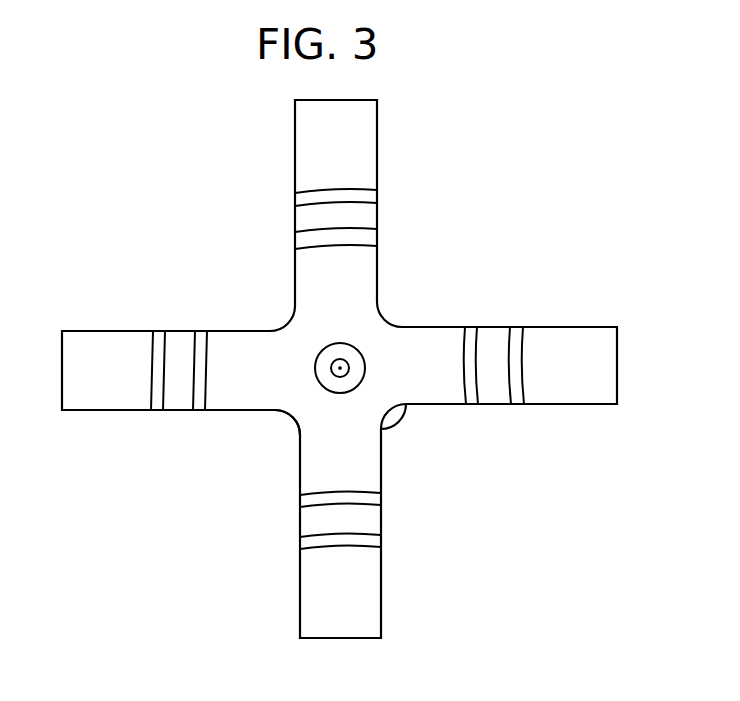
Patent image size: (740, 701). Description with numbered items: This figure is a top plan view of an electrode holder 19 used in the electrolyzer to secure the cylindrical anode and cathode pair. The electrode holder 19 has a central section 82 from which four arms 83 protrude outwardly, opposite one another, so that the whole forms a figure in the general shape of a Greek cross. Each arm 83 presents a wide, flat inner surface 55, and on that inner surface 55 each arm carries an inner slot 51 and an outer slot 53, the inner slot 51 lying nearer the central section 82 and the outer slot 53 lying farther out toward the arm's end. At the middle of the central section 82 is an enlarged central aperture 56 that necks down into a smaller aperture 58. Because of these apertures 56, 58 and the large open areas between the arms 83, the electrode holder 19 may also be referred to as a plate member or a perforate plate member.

The electrode holder 19 is at (530, 221).
The inner surface 55 is at (251, 350).
The arms 83 is at (299, 460).
The central section 82 is at (382, 397).
The central aperture 56 is at (343, 348).
The smaller aperture 58 is at (341, 367).
The inner slot 51 is at (382, 493).
The outer slot 53 is at (382, 538).